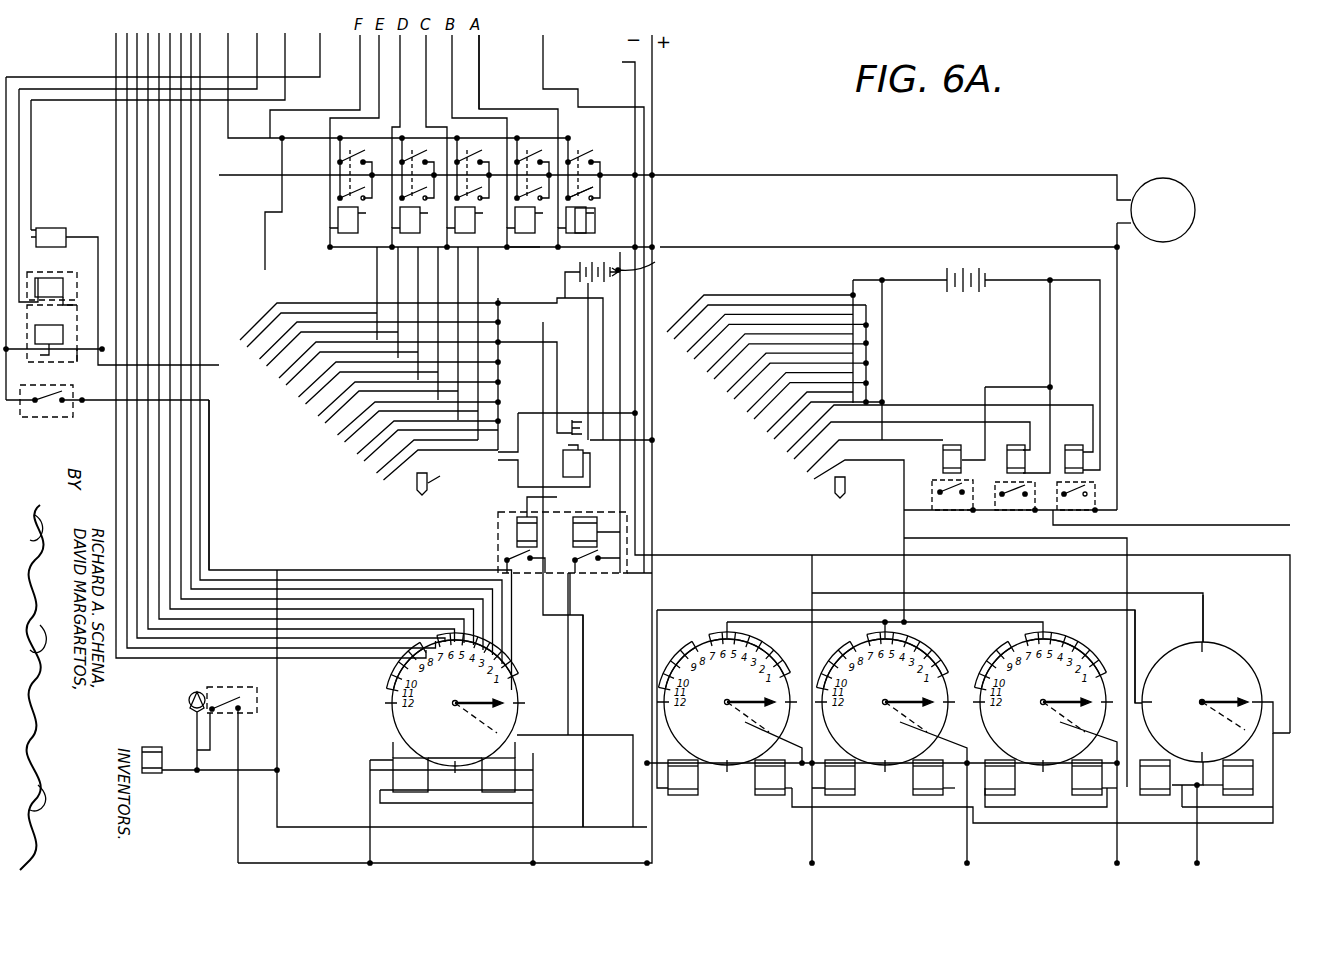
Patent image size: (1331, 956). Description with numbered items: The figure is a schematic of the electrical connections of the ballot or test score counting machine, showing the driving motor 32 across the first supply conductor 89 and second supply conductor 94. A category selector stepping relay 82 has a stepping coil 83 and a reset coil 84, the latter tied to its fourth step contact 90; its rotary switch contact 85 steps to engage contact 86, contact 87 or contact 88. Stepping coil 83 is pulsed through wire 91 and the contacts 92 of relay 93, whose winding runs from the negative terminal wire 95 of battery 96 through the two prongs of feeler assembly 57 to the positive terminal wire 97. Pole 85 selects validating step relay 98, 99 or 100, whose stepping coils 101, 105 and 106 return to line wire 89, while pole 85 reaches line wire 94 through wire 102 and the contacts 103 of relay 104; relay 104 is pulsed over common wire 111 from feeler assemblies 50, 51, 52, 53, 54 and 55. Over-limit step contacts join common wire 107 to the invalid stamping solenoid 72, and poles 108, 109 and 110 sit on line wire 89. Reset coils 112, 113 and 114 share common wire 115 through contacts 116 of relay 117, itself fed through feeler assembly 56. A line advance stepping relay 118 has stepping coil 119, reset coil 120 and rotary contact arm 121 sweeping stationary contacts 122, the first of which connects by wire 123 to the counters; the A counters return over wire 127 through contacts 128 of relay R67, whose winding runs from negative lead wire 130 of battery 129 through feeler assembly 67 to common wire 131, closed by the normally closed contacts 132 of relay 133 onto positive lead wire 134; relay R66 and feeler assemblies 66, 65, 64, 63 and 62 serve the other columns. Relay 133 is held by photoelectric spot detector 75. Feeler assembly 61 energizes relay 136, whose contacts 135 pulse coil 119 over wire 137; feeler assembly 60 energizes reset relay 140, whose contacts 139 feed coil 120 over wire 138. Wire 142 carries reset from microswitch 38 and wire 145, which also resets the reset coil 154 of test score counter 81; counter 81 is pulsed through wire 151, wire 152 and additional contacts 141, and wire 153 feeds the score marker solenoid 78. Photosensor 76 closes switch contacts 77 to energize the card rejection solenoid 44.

The driving motor 32 is at (1178, 182).
The microswitch 38 is at (33, 420).
The card rejection solenoid 44 is at (152, 775).
The feeler assembly 50 is at (702, 302).
The feeler assembly 51 is at (712, 340).
The feeler assembly 52 is at (732, 362).
The feeler assembly 53 is at (750, 382).
The feeler assembly 54 is at (770, 402).
The feeler assembly 55 is at (790, 421).
The feeler assembly 56 is at (810, 440).
The feeler assembly 57 is at (832, 462).
The feeler assembly 60 is at (250, 318).
The feeler assembly 61 is at (268, 342).
The feeler assembly 62 is at (288, 364).
The feeler assembly 63 is at (308, 386).
The feeler assembly 64 is at (328, 408).
The feeler assembly 65 is at (348, 428).
The feeler assembly 66 is at (368, 447).
The feeler assembly 67 is at (382, 482).
The invalid stamping solenoid 72 is at (846, 488).
The photoelectric spot detector 75 is at (424, 497).
The photosensor 76 is at (196, 692).
The switch contacts 77 is at (232, 718).
The score marker solenoid 78 is at (45, 228).
The test score counter 81 is at (70, 280).
The stepping relay 82 is at (1225, 655).
The stepping coil 83 is at (1155, 777).
The reset coil 84 is at (1228, 777).
The rotary switch contact 85 is at (1225, 703).
The contact 86 is at (1268, 702).
The contact 87 is at (1203, 645).
The contact 88 is at (1148, 690).
The first supply conductor 89 is at (700, 862).
The fourth step contact 90 is at (1203, 760).
The wire 91 is at (1276, 815).
The contacts 92 is at (1010, 496).
The relay 93 is at (943, 458).
The second supply conductor 94 is at (600, 827).
The negative terminal wire 95 is at (990, 292).
The battery 96 is at (965, 295).
The positive terminal wire 97 is at (884, 300).
The validating step relay 98 is at (1042, 719).
The validating step relay 99 is at (888, 709).
The validating step relay 100 is at (728, 699).
The stepping coil 101 is at (1000, 777).
The wire 102 is at (1225, 525).
The contacts 103 is at (1077, 497).
The relay 104 is at (1074, 452).
The stepping coil 105 is at (840, 777).
The stepping coil 106 is at (683, 777).
The common wire 107 is at (944, 622).
The pole 108 is at (1048, 722).
The pole 109 is at (890, 722).
The pole 110 is at (745, 722).
The common wire 111 is at (868, 356).
The reset coil 112 is at (1094, 777).
The reset coil 113 is at (934, 777).
The reset coil 114 is at (773, 777).
The common wire 115 is at (858, 812).
The contacts 116 is at (1016, 497).
The relay 117 is at (1004, 452).
The stepping relay 118 is at (455, 703).
The stepping coil 119 is at (462, 716).
The reset coil 120 is at (497, 794).
The rotary contact arm 121 is at (478, 698).
The stationary contacts 122 is at (528, 690).
The wire 123 is at (344, 582).
The wire 127 is at (482, 75).
The contacts 128 is at (590, 195).
The battery 129 is at (656, 259).
The negative lead wire 130 is at (622, 303).
The common wire 131 is at (500, 378).
The normally closed contacts 132 is at (575, 415).
The relay 133 is at (583, 465).
The positive lead wire 134 is at (565, 280).
The contacts 135 is at (517, 530).
The relay 136 is at (500, 512).
The wire 137 is at (584, 700).
The wire 138 is at (575, 700).
The contacts 139 is at (590, 578).
The reset relay 140 is at (597, 537).
The additional contacts 141 is at (590, 158).
The wire 142 is at (648, 583).
The wire 145 is at (318, 78).
The wire 151 is at (36, 75).
The wire 152 is at (228, 78).
The wire 153 is at (31, 165).
The reset coil 154 is at (44, 360).
The relay R66 is at (508, 248).
The relay R67 is at (596, 230).